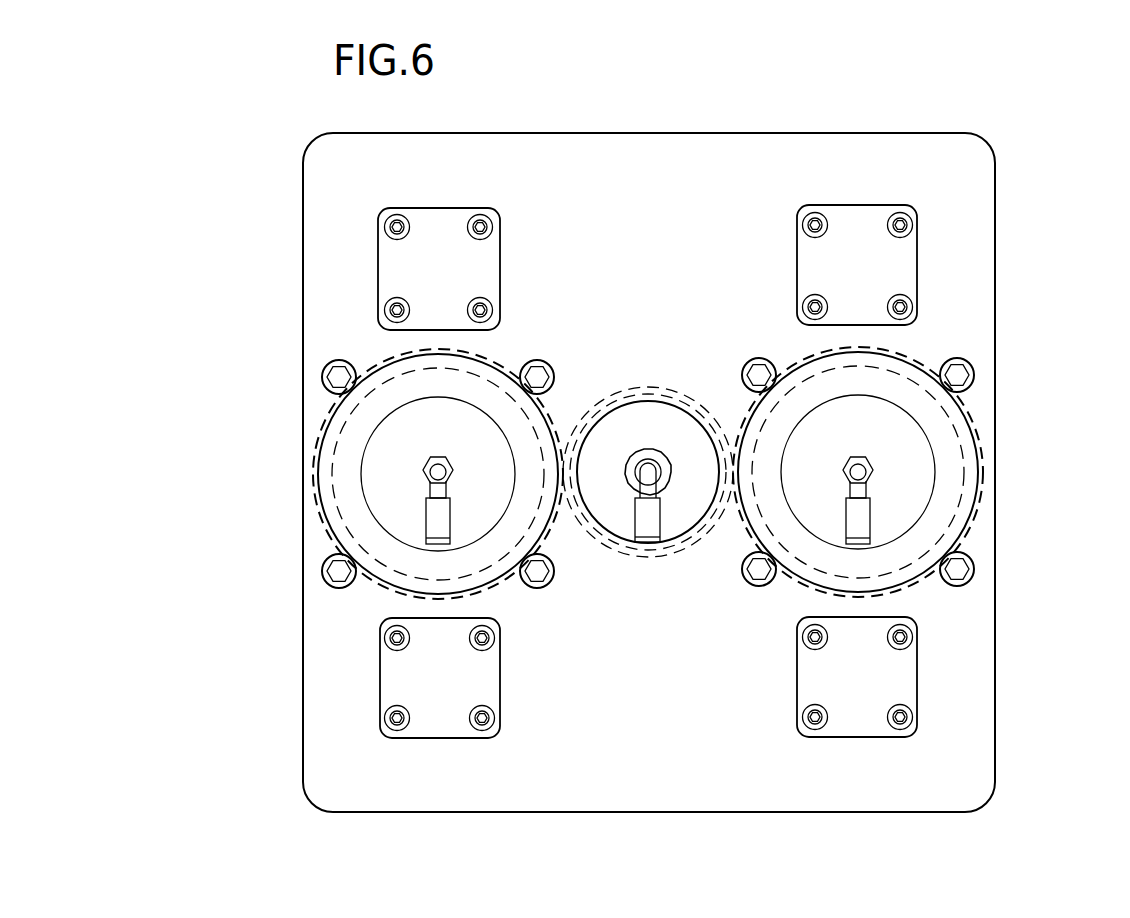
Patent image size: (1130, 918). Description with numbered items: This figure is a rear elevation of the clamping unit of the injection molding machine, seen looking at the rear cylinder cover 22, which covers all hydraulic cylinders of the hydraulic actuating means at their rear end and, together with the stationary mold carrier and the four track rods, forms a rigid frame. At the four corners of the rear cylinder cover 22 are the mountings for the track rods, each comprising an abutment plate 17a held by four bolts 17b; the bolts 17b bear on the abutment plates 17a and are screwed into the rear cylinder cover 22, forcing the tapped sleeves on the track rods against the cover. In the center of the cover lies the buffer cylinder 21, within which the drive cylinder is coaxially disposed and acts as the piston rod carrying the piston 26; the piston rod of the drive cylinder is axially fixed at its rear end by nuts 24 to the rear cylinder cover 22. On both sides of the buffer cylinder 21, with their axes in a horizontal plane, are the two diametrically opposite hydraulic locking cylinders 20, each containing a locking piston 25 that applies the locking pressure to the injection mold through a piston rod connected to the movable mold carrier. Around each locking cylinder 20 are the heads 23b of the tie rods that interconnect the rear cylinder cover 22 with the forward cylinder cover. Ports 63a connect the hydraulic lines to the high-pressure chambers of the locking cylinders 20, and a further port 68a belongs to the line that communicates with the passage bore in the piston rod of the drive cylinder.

The rear cylinder cover 22 is at (697, 470).
The abutment plates 17a is at (567, 389).
The bolts 17b is at (743, 559).
The hydraulic locking cylinders 20 is at (1003, 466).
The locking pistons 25 is at (704, 473).
The heads 23b is at (653, 437).
The ports 63a is at (655, 500).
The buffer cylinder 21 is at (657, 555).
The piston 26 is at (603, 528).
The nuts 24 is at (859, 451).
The central stem 68a is at (873, 529).